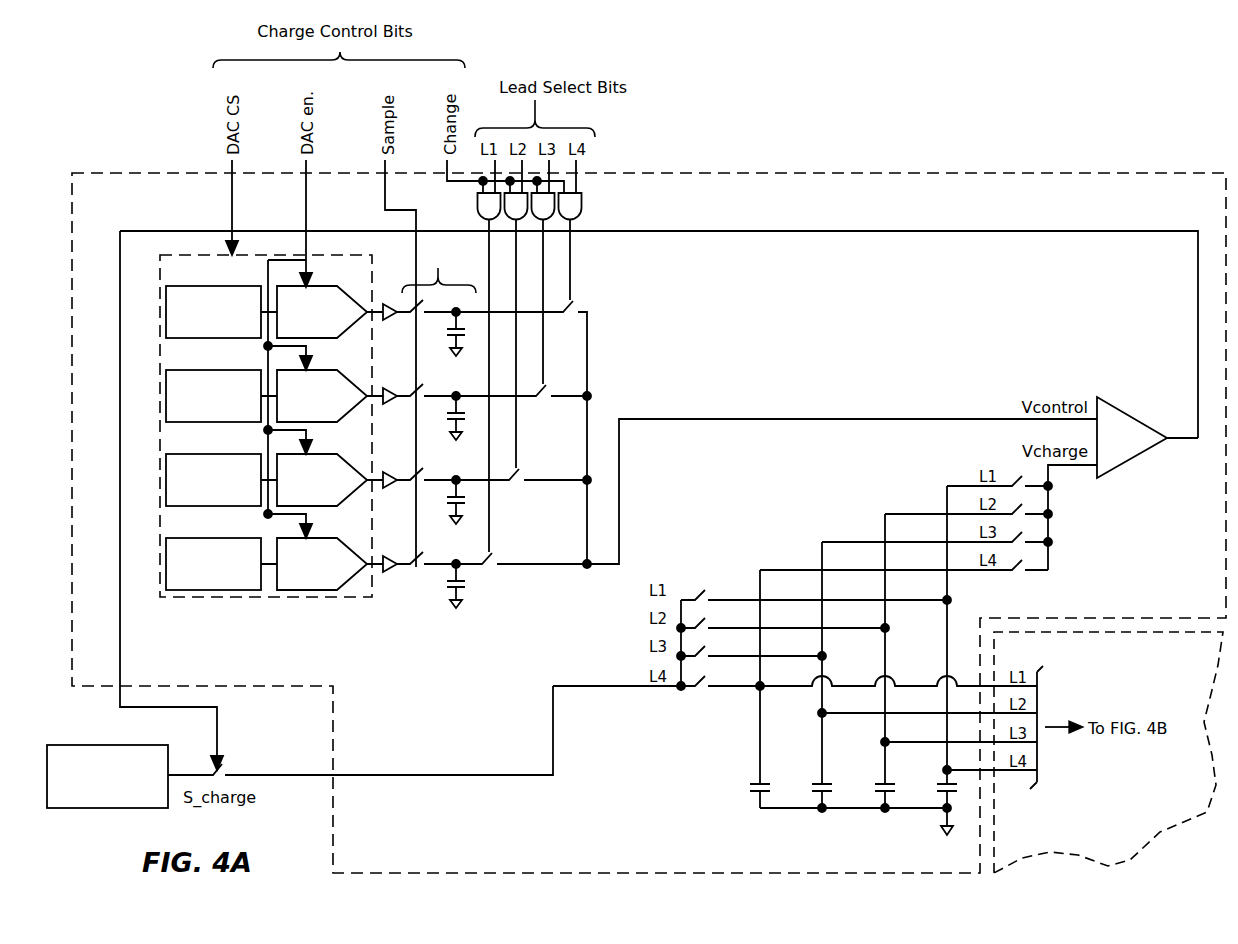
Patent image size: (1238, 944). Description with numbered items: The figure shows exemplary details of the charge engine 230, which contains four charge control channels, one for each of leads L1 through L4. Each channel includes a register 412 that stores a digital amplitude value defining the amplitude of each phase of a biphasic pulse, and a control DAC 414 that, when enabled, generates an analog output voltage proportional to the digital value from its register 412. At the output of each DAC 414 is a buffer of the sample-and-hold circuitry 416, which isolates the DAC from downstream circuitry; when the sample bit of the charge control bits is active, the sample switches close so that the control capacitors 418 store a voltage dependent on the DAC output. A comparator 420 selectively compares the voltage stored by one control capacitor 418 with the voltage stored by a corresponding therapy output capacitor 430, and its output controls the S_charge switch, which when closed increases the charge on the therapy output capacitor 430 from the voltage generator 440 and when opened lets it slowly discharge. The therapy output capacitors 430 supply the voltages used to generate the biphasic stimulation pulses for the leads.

The charge engine circuitry 230 is at (649, 523).
The register 412 is at (163, 617).
The control digital-to-analog converter 414 is at (272, 617).
The sample-and-hold circuitry 416 is at (374, 617).
The control capacitor 418 is at (475, 617).
The comparator 420 is at (1126, 416).
The therapy output capacitor 430 is at (700, 800).
The voltage generator 440 is at (118, 745).